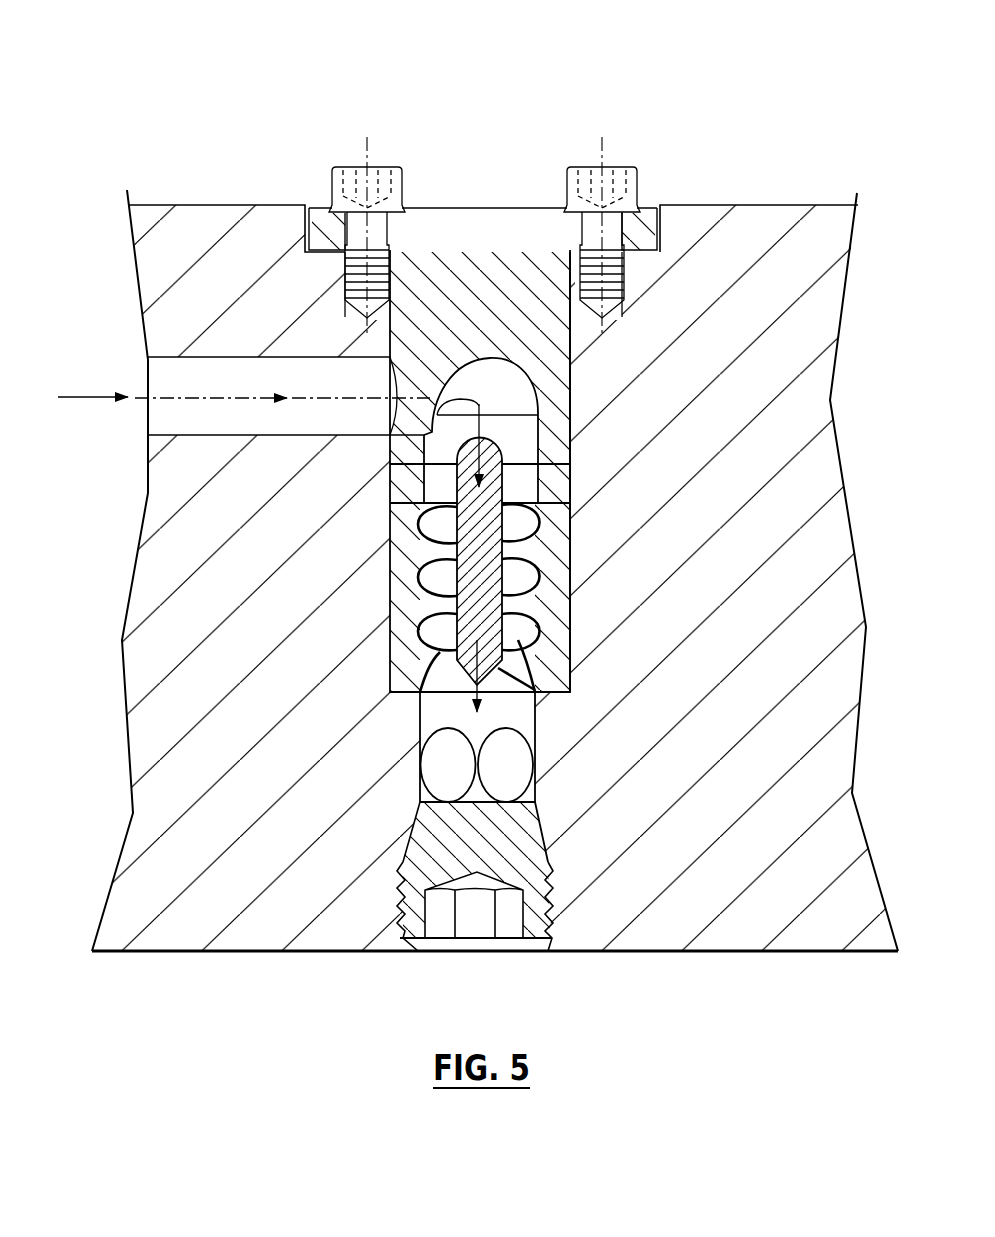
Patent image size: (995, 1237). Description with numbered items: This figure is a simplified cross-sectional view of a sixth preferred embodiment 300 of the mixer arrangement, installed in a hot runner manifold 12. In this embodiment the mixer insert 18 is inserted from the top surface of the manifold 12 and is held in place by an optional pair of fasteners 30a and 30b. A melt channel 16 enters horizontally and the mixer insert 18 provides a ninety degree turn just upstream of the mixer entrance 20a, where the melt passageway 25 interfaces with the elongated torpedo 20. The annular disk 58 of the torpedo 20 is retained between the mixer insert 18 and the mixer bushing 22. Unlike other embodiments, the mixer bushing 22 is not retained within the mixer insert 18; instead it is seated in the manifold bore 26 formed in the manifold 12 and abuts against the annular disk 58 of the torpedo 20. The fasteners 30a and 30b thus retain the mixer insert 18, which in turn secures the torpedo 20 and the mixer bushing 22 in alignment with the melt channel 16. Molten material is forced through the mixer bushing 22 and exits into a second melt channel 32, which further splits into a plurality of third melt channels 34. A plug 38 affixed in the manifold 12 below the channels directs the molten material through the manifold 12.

The sixth preferred embodiment 300 is at (247, 62).
The hot runner manifold 12 is at (250, 920).
The melt channel 16 is at (231, 427).
The mixer insert 18 is at (488, 210).
The fastener 30a is at (353, 165).
The fastener 30b is at (617, 165).
The melt passageway 25 is at (519, 410).
The manifold bore 26 is at (572, 400).
The elongated torpedo 20 is at (550, 484).
The entrance 20a is at (440, 458).
The annular disk 58 is at (402, 488).
The mixer bushing 22 is at (550, 558).
The second melt channel 32 is at (521, 721).
The third melt channels 34 is at (525, 789).
The plug 38 is at (430, 940).